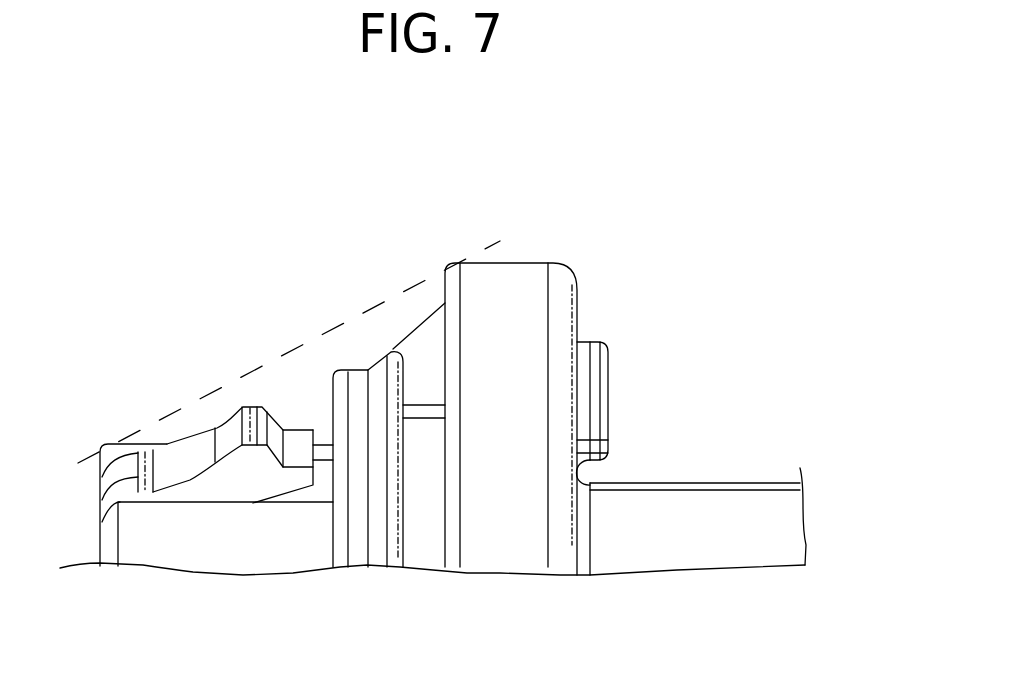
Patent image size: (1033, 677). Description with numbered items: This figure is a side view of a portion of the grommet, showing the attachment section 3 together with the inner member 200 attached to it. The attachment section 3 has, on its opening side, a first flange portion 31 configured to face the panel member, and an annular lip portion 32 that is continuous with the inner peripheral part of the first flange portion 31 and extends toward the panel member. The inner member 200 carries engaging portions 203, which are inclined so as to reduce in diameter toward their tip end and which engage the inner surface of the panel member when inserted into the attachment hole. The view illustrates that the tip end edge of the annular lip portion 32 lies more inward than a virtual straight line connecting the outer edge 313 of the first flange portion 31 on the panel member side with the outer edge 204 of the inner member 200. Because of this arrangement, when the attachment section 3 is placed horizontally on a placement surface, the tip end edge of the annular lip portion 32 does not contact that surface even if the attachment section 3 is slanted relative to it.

The inner member 200 is at (100, 502).
The engaging portions 203 is at (253, 470).
The outer edge of the inner member 204 is at (105, 446).
The attachment section 3 is at (442, 392).
The first flange portion 31 is at (508, 283).
The outer edge of the first flange portion 313 is at (450, 263).
The annular lip portion 32 is at (360, 506).